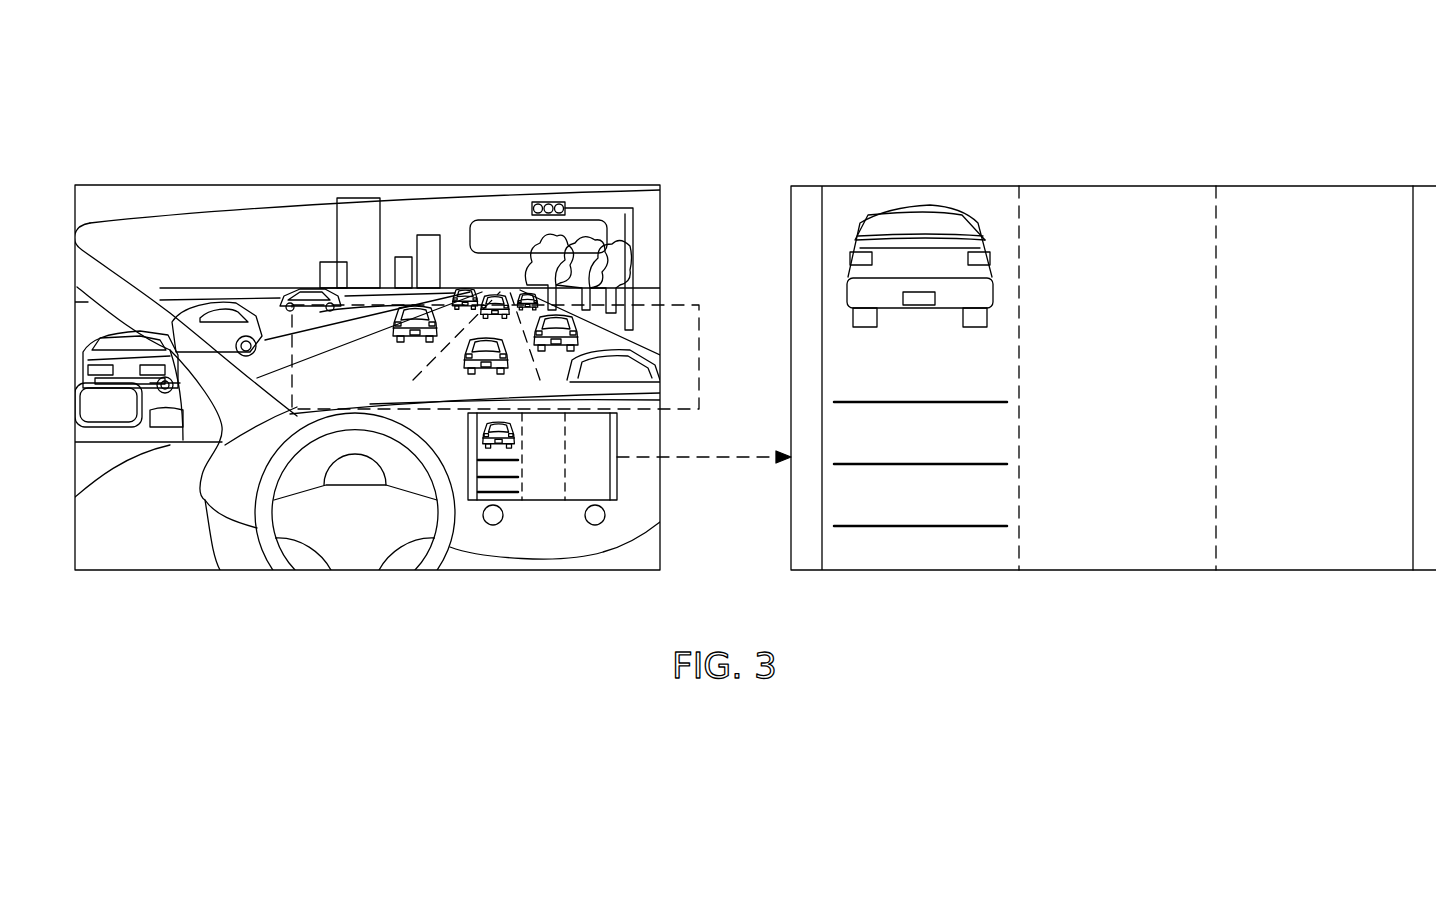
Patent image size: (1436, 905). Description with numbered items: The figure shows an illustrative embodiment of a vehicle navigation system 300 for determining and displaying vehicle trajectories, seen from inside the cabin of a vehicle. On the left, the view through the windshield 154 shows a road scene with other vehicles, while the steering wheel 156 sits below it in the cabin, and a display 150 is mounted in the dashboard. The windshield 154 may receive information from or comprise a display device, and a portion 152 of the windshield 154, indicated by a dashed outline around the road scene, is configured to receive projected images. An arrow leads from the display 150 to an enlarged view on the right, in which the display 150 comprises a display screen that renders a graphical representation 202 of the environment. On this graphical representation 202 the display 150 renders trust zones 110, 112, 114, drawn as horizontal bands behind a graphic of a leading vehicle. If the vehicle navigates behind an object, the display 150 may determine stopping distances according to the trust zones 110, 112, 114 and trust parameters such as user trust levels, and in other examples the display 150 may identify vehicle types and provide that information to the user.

The vehicle navigation system 300 is at (290, 96).
The windshield 154 is at (158, 227).
The portion of the windshield 152 is at (682, 305).
The display 150 is at (542, 500).
The steering wheel 156 is at (360, 562).
The graphical representation 202 is at (1322, 195).
The trust zone 114 is at (957, 400).
The trust zone 112 is at (957, 462).
The trust zone 110 is at (957, 524).